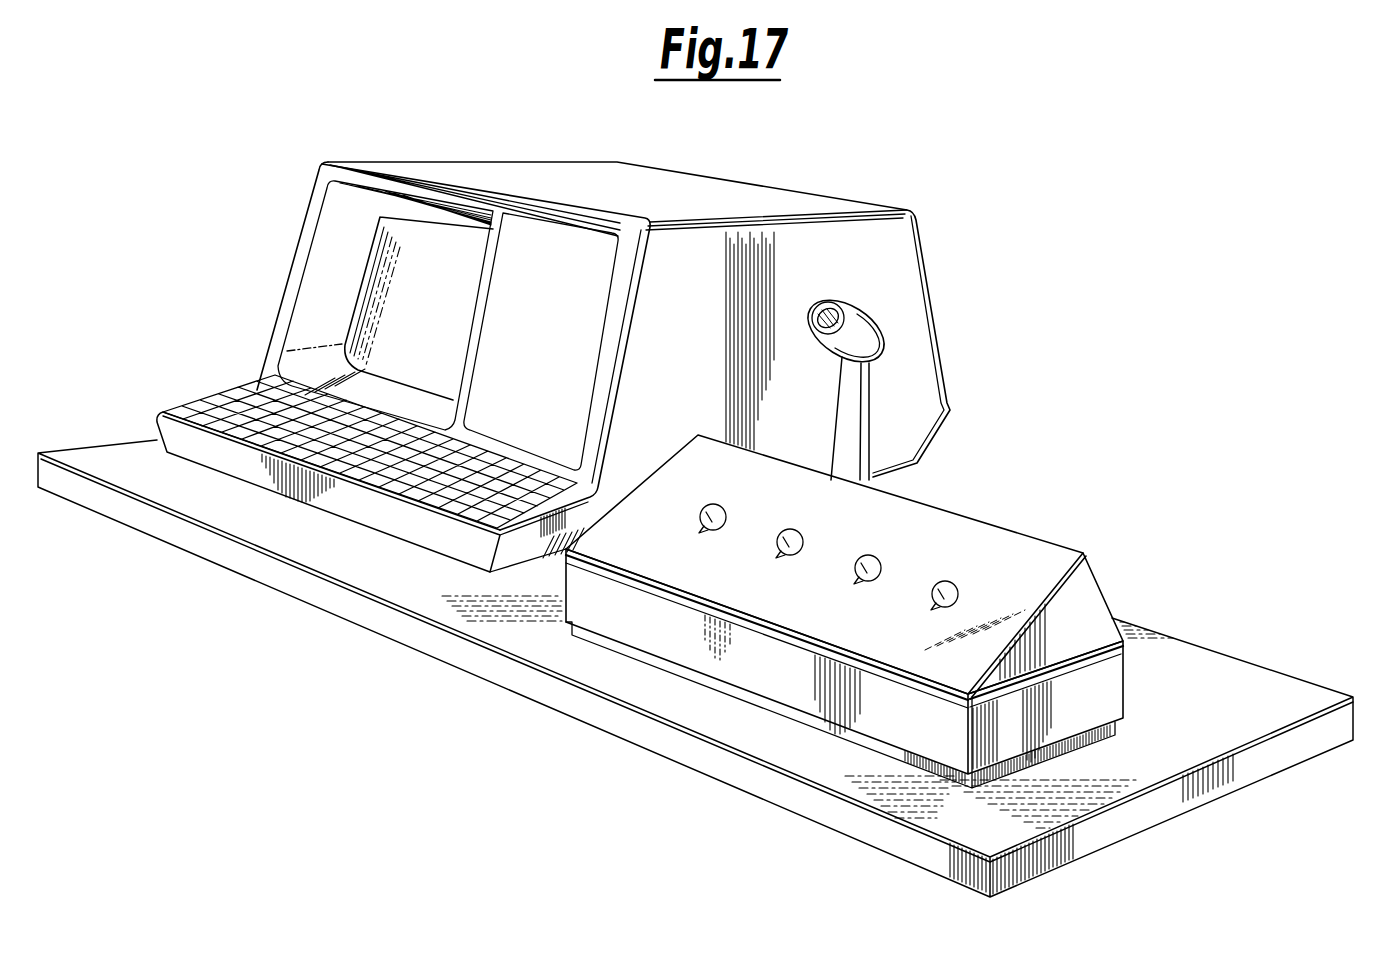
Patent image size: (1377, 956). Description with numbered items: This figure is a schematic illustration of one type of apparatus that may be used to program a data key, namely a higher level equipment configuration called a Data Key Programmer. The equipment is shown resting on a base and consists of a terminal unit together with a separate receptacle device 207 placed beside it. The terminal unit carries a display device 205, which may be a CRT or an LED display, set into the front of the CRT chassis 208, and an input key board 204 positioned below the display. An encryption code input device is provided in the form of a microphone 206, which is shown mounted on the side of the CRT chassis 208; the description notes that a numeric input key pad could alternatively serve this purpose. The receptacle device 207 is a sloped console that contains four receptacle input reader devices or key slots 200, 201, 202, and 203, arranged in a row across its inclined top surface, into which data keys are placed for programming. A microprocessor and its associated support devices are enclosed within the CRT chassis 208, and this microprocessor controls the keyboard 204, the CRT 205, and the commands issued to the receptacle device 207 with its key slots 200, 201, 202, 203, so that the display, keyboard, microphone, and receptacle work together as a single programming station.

The key slot 200 is at (723, 509).
The key slot 201 is at (801, 533).
The key slot 202 is at (878, 557).
The key slot 203 is at (955, 586).
The input key board 204 is at (233, 398).
The display device 205 is at (387, 290).
The microphone 206 is at (883, 343).
The control console 207 is at (747, 643).
The CRT chassis 208 is at (797, 190).